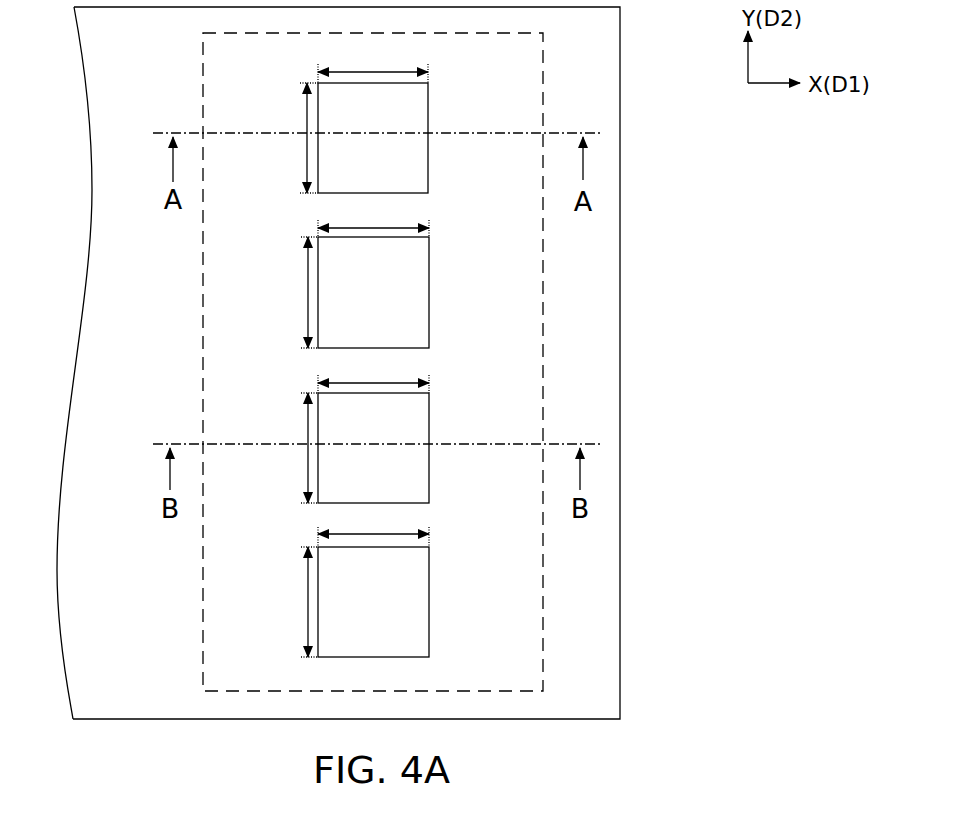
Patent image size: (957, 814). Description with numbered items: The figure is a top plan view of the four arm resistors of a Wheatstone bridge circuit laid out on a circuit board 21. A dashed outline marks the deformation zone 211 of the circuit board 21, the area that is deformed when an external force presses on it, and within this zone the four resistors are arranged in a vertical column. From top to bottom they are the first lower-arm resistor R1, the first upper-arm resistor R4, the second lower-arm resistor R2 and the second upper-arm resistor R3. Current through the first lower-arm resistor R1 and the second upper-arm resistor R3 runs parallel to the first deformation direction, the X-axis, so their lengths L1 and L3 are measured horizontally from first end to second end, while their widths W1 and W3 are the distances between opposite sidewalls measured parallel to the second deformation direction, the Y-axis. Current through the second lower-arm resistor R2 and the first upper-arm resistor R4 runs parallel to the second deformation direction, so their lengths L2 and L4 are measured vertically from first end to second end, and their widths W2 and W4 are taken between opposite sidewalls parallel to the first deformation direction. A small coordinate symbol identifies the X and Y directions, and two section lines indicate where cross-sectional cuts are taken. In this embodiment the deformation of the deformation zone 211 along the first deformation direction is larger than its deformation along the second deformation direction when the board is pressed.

The circuit board 21 is at (595, 312).
The deformation zone 211 is at (544, 104).
The first lower-arm resistor R1 is at (428, 118).
The second lower-arm resistor R2 is at (429, 428).
The second upper-arm resistor R3 is at (429, 600).
The first upper-arm resistor R4 is at (429, 275).
The length of the first lower-arm resistor L1 is at (373, 61).
The width of the first lower-arm resistor W1 is at (295, 138).
The length of the second lower-arm resistor L2 is at (295, 448).
The width of the second lower-arm resistor W2 is at (373, 371).
The length of the second upper-arm resistor L3 is at (373, 524).
The width of the second upper-arm resistor W3 is at (295, 602).
The length of the first upper-arm resistor L4 is at (295, 292).
The width of the first upper-arm resistor W4 is at (373, 215).